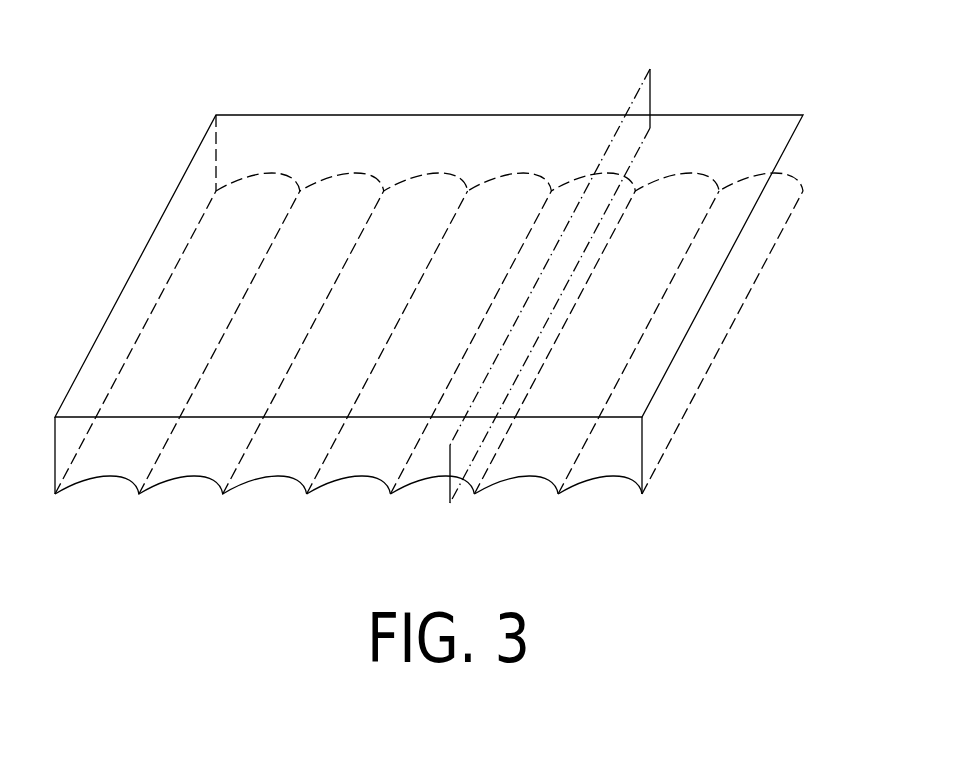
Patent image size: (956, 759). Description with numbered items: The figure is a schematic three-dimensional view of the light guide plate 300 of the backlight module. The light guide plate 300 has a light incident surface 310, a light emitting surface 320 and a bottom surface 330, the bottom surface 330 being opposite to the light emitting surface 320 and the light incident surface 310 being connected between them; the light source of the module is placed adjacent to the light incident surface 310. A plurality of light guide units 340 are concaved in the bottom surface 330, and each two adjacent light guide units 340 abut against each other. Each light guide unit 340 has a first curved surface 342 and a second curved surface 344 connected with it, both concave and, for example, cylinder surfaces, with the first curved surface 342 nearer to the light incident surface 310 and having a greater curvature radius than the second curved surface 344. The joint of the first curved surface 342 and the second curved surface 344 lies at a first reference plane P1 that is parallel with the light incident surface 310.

The light guide plate 300 is at (440, 324).
The light incident surface 310 is at (136, 263).
The light emitting surface 320 is at (285, 135).
The bottom surface 330 is at (616, 492).
The light guide unit 340 is at (387, 517).
The first curved surface 342 is at (412, 486).
The second curved surface 344 is at (468, 488).
The first reference plane P1 is at (641, 102).